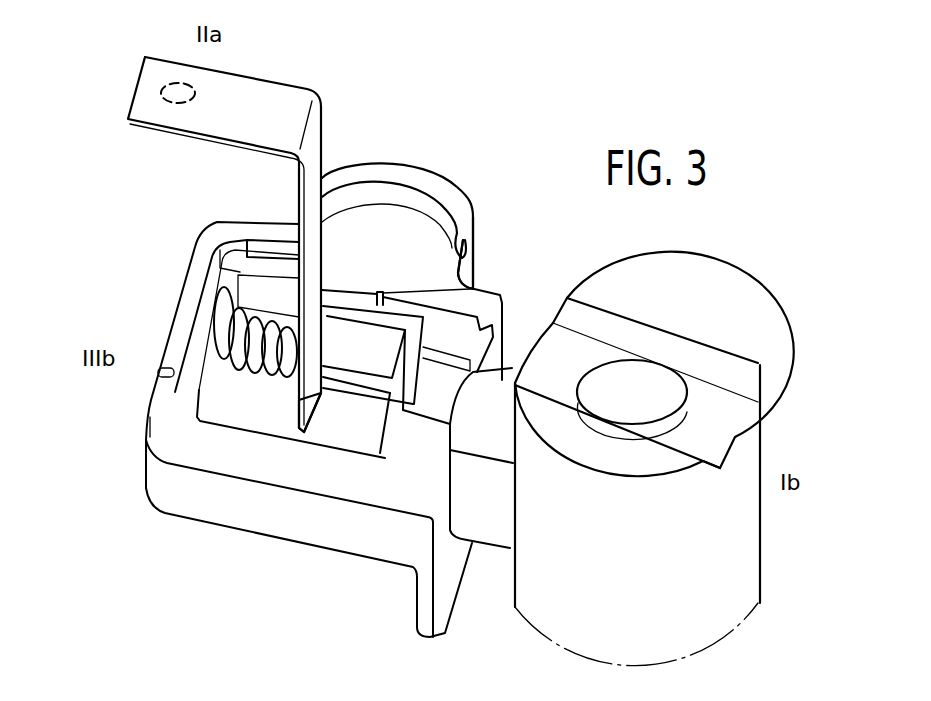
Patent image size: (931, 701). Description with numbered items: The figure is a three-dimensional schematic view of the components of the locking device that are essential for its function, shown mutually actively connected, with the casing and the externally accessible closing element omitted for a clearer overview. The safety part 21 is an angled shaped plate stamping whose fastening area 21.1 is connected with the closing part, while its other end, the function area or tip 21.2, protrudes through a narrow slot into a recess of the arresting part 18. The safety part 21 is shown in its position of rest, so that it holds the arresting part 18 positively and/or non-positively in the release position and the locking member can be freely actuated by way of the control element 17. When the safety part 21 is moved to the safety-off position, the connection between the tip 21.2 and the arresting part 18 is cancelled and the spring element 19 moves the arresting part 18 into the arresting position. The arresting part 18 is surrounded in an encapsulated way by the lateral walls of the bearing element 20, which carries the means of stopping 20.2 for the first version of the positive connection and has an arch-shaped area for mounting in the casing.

The control element 17 is at (674, 297).
The arresting part 18 is at (374, 359).
The spring element 19 is at (250, 337).
The bearing element 20 is at (460, 202).
The means of stopping 20.2 is at (473, 287).
The safety part 21 is at (195, 316).
The fastening area 21.1 is at (143, 89).
The function area 21.2 is at (313, 397).